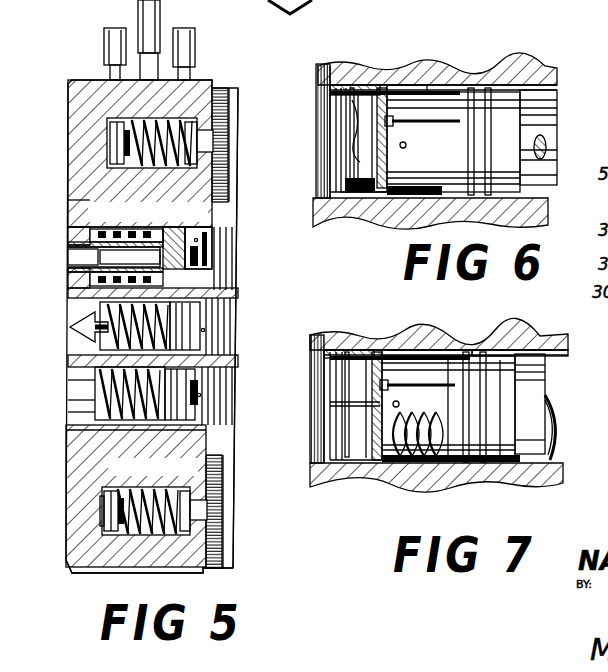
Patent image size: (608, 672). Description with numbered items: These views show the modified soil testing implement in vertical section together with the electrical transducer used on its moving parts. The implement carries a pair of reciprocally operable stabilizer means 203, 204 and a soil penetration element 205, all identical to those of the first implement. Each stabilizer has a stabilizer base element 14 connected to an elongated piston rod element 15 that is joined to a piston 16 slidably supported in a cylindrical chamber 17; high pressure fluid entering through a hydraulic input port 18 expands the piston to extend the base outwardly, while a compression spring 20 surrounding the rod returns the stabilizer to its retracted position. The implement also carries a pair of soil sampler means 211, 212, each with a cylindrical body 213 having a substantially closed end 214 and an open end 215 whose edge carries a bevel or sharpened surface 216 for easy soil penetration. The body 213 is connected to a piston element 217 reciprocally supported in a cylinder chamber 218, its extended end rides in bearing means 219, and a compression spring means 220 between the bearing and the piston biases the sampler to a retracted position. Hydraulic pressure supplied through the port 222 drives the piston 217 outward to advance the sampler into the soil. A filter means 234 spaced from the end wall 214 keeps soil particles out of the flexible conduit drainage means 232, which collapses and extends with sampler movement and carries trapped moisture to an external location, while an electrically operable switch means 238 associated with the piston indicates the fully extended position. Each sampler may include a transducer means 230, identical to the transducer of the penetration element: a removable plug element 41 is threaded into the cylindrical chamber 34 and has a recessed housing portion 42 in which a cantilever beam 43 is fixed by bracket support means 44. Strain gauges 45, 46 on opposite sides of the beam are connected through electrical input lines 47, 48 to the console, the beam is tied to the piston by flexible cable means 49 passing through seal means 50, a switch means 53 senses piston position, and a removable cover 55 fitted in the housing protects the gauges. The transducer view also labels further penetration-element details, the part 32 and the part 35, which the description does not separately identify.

In FIG. 5, the stabilizer base element 14 is at (228, 100).
In FIG. 5, the piston rod element 15 is at (226, 126).
In FIG. 5, the piston 16 is at (105, 494).
In FIG. 5, the cylindrical chamber 17 is at (145, 130).
In FIG. 5, the hydraulic input port 18 is at (99, 144).
In FIG. 5, the compression spring 20 is at (186, 135).
In FIG. 5, the stabilizer means 203 is at (245, 145).
In FIG. 5, the stabilizer means 204 is at (242, 549).
In FIG. 5, the soil penetration element 205 is at (75, 332).
In FIG. 5, the soil sampler means 211 is at (60, 261).
In FIG. 5, the soil sampler means 212 is at (64, 400).
In FIG. 5, the cylindrical body 213 is at (70, 275).
In FIG. 7, the cylindrical body 213 is at (556, 446).
In FIG. 5, the closed end 214 is at (98, 265).
In FIG. 5, the open end 215 is at (82, 235).
In FIG. 5, the bevel or sharpened surface 216 is at (72, 250).
In FIG. 5, the cylinder chamber 218 is at (190, 230).
In FIG. 7, the cylinder chamber 218 is at (470, 349).
In FIG. 5, the bearing means 219 is at (68, 215).
In FIG. 5, the compression spring means 220 is at (165, 235).
In FIG. 5, the filter means 234 is at (160, 258).
In FIG. 5, the electrically operable switch means 238 is at (92, 232).
In FIG. 6, the piston 32 is at (542, 140).
In FIG. 6, the cylindrical chamber 34 is at (540, 112).
In FIG. 6, the pin 35 is at (408, 145).
In FIG. 6, the removable plug element 41 is at (355, 200).
In FIG. 7, the removable plug element 41 is at (335, 470).
In FIG. 6, the recessed housing portion 42 is at (405, 85).
In FIG. 7, the recessed housing portion 42 is at (335, 350).
In FIG. 6, the cantilever beam 43 is at (362, 160).
In FIG. 7, the cantilever beam 43 is at (362, 352).
In FIG. 6, the bracket support means 44 is at (340, 205).
In FIG. 7, the bracket support means 44 is at (312, 470).
In FIG. 6, the strain gauge 45 is at (346, 185).
In FIG. 7, the strain gauge 45 is at (335, 395).
In FIG. 6, the strain gauge 46 is at (388, 153).
In FIG. 7, the strain gauge 46 is at (372, 420).
In FIG. 6, the electrical input line 47 is at (350, 140).
In FIG. 6, the electrical input line 48 is at (355, 86).
In FIG. 6, the flexible cable means 49 is at (425, 122).
In FIG. 7, the flexible cable means 49 is at (405, 386).
In FIG. 6, the seal means 50 is at (392, 120).
In FIG. 7, the seal means 50 is at (400, 401).
In FIG. 6, the switch means 53 is at (440, 85).
In FIG. 6, the removable cover 55 is at (340, 125).
In FIG. 7, the removable cover 55 is at (335, 428).
In FIG. 7, the piston element 217 is at (503, 466).
In FIG. 7, the port 222 is at (388, 465).
In FIG. 7, the transducer means 230 is at (415, 349).
In FIG. 7, the flexible conduit drainage means 232 is at (448, 465).